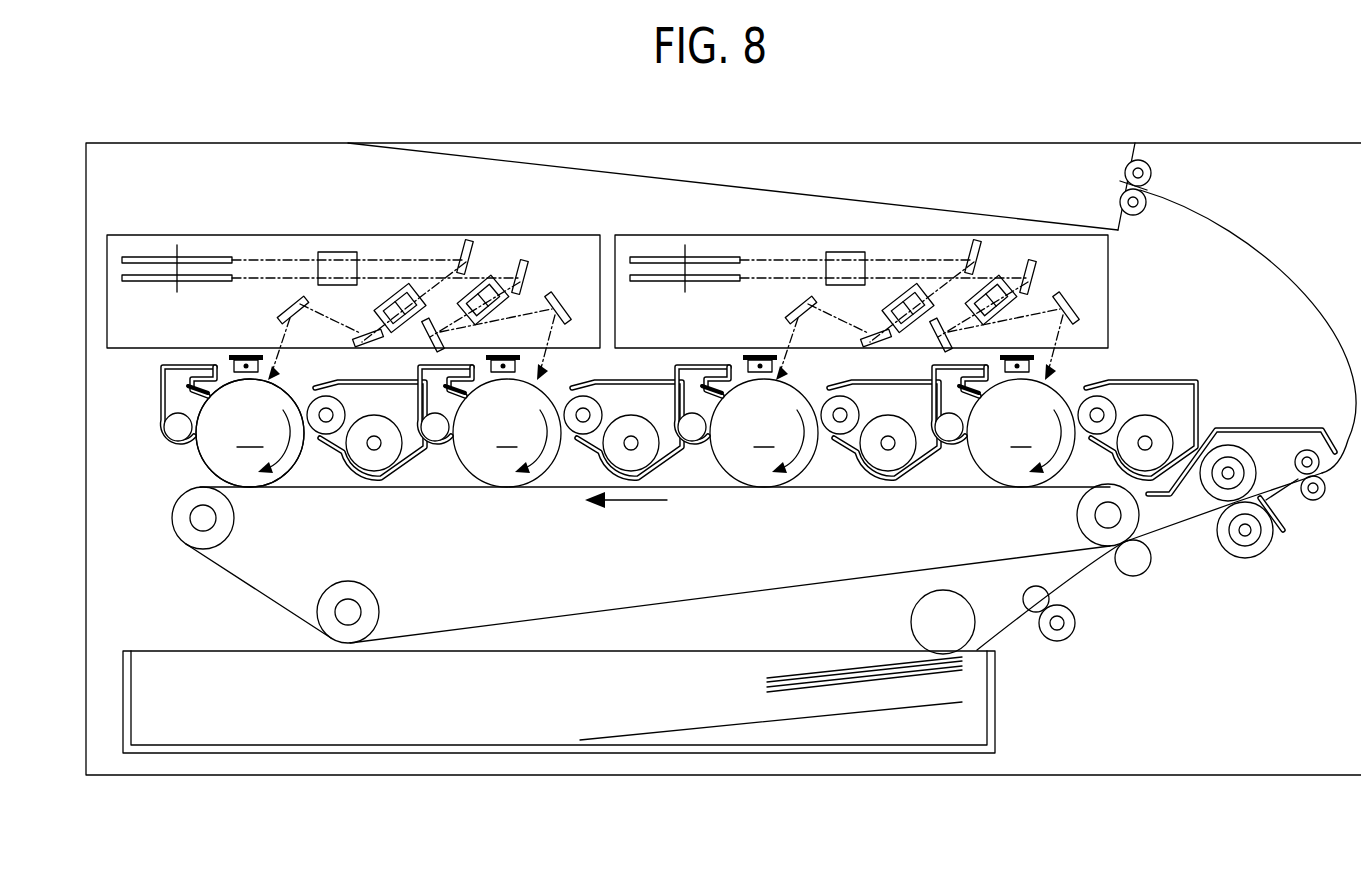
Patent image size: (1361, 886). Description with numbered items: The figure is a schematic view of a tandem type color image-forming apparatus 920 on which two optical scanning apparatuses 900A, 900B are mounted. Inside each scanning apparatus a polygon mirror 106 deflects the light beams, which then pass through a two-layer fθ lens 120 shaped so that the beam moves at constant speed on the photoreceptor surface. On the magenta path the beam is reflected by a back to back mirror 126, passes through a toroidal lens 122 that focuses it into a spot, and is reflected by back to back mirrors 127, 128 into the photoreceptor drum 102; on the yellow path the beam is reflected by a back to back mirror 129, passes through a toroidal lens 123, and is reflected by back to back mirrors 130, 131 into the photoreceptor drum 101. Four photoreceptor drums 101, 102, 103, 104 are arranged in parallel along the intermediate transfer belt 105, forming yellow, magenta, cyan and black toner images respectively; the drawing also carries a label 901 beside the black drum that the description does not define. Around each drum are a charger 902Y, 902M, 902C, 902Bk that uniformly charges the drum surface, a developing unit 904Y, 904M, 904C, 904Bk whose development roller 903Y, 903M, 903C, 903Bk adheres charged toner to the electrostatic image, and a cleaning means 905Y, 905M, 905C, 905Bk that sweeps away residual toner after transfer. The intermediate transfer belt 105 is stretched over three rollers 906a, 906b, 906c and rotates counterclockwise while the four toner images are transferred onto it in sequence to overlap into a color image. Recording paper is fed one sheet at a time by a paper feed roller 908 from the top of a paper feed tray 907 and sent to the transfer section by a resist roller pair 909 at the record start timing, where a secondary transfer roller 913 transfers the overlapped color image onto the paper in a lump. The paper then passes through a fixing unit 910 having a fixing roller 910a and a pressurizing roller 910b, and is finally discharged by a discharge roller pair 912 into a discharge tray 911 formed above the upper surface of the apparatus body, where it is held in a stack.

The color image-forming apparatus 920 is at (1293, 142).
The discharge tray 911 is at (947, 162).
The discharge roller pair 912 is at (1152, 172).
The optical scanning apparatus 900A is at (856, 283).
The optical scanning apparatus 900B is at (145, 234).
The polygon mirror 106 is at (203, 256).
The fθ lens 120 is at (338, 251).
The back to back mirror 126 is at (460, 242).
The toroidal lens 122 is at (383, 300).
The toroidal lens 123 is at (488, 283).
The back to back mirror 127 is at (358, 346).
The back to back mirror 128 is at (284, 304).
The back to back mirror 129 is at (530, 273).
The back to back mirror 130 is at (425, 348).
The back to back mirror 131 is at (566, 304).
The photoreceptor drum 101 is at (1021, 452).
The photoreceptor drum 102 is at (771, 452).
The photoreceptor drum 103 is at (514, 452).
The photoreceptor drum 104 is at (257, 452).
The photoconductor drum 901 is at (226, 433).
The charger 902Bk is at (228, 340).
The charger 902C is at (542, 368).
The charger 902M is at (744, 340).
The charger 902Y is at (1055, 368).
The development roller 903Bk is at (363, 432).
The development roller 903C is at (614, 432).
The development roller 903M is at (873, 432).
The development roller 903Y is at (1128, 432).
The developing unit 904Bk is at (366, 458).
The developing unit 904C is at (623, 399).
The developing unit 904M is at (880, 458).
The developing unit 904Y is at (1137, 404).
The cleaning means 905Bk is at (154, 416).
The cleaning means 905C is at (446, 444).
The cleaning means 905M is at (703, 444).
The cleaning means 905Y is at (960, 444).
The intermediate transfer belt 105 is at (722, 598).
The roller 906a is at (228, 535).
The roller 906b is at (376, 601).
The roller 906c is at (1080, 523).
The paper feed tray 907 is at (122, 660).
The paper feed roller 908 is at (912, 622).
The resist roller pair 909 is at (1066, 638).
The secondary transfer roller 913 is at (1140, 573).
The fixing unit 910 is at (1241, 484).
The fixing roller 910a is at (1232, 448).
The pressurizing roller 910b is at (1250, 556).